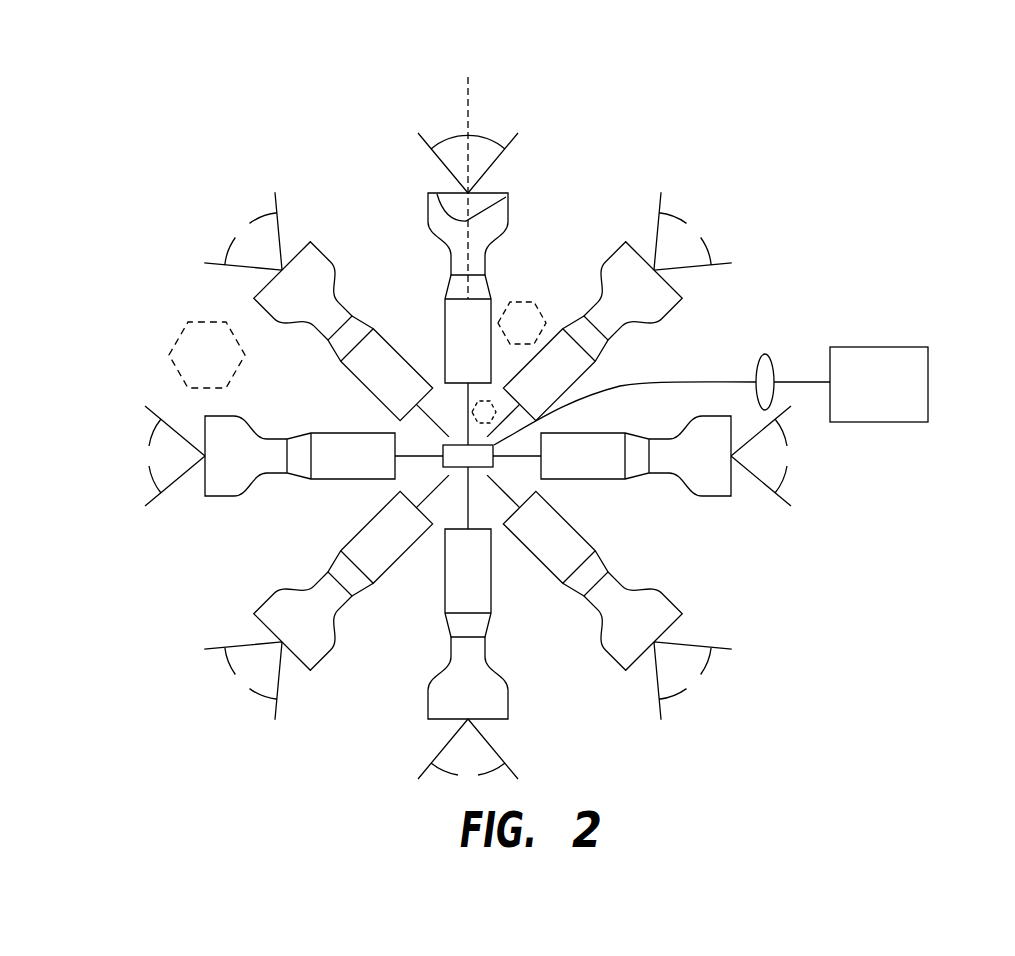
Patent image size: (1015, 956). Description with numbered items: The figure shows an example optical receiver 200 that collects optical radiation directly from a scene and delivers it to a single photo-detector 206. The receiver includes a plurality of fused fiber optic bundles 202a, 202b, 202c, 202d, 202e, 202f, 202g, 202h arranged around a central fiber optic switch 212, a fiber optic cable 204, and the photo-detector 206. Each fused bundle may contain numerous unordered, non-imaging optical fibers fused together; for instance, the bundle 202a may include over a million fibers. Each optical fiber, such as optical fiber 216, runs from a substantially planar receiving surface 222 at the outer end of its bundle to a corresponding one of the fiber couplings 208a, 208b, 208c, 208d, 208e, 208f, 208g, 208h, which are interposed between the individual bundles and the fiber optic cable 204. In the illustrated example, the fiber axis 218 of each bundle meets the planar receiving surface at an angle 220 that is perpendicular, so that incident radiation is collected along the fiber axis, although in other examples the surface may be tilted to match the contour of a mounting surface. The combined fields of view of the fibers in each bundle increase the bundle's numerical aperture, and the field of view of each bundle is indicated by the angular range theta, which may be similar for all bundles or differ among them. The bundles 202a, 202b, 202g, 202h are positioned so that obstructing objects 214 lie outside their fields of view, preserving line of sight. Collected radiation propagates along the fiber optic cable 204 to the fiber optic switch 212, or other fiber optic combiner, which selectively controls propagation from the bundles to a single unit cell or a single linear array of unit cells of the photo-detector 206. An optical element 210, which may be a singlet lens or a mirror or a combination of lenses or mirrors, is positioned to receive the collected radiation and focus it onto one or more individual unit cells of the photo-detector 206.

The optical receiver 200 is at (270, 153).
The fused fiber optic bundle 202a is at (500, 222).
The fused fiber optic bundle 202b is at (672, 305).
The fused fiber optic bundle 202c is at (703, 493).
The fused fiber optic bundle 202d is at (670, 600).
The fused fiber optic bundle 202e is at (510, 702).
The fused fiber optic bundle 202f is at (323, 657).
The fused fiber optic bundle 202g is at (228, 497).
The fused fiber optic bundle 202h is at (315, 247).
The fiber optic cable 204 is at (446, 420).
The photo-detector 206 is at (905, 346).
The fiber coupling 208a is at (444, 312).
The fiber coupling 208b is at (578, 392).
The fiber coupling 208c is at (597, 430).
The fiber coupling 208d is at (593, 545).
The fiber coupling 208e is at (493, 590).
The fiber coupling 208f is at (378, 513).
The fiber coupling 208g is at (365, 432).
The fiber coupling 208h is at (345, 372).
The optical element 210 is at (769, 355).
The fiber optic switch 212 is at (497, 467).
The obstructing object 214 is at (473, 403).
The optical fiber 216 is at (506, 197).
The fiber axis 218 is at (472, 86).
The angle 220 is at (430, 213).
The substantially planar receiving surface 222 is at (495, 189).